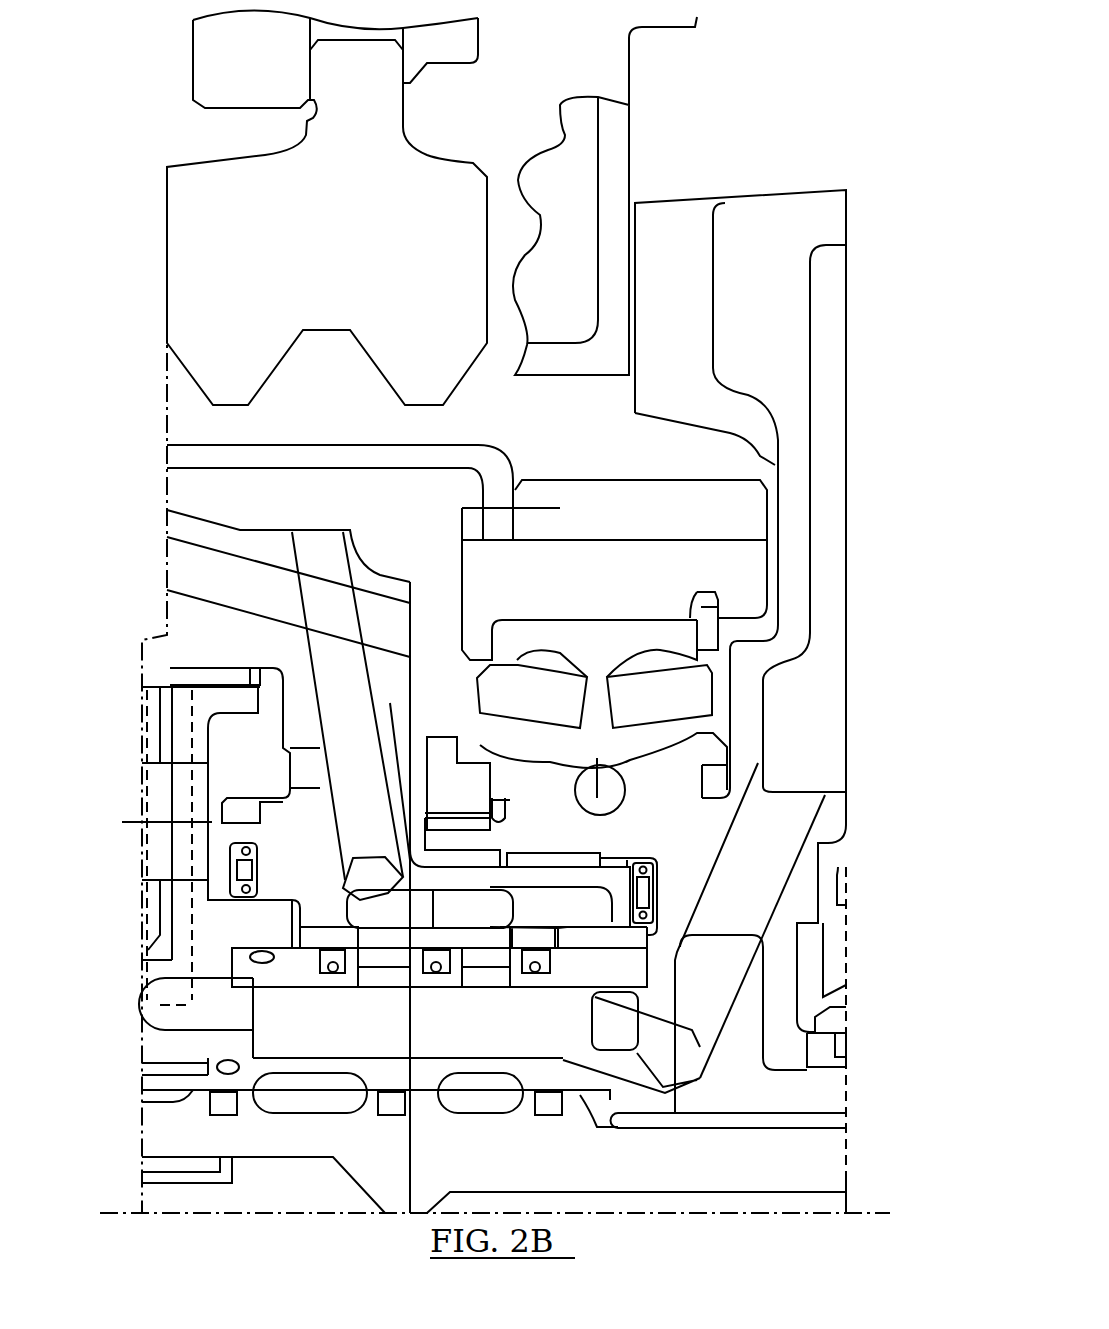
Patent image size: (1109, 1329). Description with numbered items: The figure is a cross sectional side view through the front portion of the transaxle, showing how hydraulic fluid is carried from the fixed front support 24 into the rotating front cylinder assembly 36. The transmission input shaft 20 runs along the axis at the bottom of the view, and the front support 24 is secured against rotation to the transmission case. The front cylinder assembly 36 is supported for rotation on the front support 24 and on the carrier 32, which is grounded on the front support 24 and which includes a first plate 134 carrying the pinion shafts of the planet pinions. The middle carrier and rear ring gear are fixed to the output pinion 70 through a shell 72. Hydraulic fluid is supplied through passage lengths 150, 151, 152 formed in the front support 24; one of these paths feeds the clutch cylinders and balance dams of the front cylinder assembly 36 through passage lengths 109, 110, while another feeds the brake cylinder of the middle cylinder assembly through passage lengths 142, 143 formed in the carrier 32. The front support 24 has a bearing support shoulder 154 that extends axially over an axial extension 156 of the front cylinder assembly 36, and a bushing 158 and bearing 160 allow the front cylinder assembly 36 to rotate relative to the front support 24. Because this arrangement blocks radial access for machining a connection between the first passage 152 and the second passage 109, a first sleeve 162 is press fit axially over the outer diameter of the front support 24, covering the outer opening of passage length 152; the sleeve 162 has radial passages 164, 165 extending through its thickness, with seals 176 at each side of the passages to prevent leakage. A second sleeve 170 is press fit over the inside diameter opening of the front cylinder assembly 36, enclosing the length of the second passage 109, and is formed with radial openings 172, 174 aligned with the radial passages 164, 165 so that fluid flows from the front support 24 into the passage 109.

The transmission input shaft 20 is at (697, 1178).
The front support 24 is at (763, 210).
The carrier 32 is at (213, 752).
The front cylinder assembly 36 is at (228, 540).
The output pinion 70 is at (588, 505).
The shell 72 is at (482, 462).
The passage length 109 is at (493, 920).
The passage length 110 is at (360, 727).
The first plate 134 is at (198, 740).
The passage length 142 is at (240, 1025).
The passage length 143 is at (180, 833).
The passage length 150 is at (780, 877).
The passage length 151 is at (631, 1042).
The first passage 152 is at (310, 1038).
The bearing support shoulder 154 is at (652, 848).
The axial extension 156 is at (462, 873).
The bushing 158 is at (558, 858).
The bearing 160 is at (643, 897).
The first sleeve 162 is at (278, 967).
The radial passage 164 is at (385, 978).
The radial passage 165 is at (487, 980).
The second sleeve 170 is at (330, 933).
The radial opening 172 is at (393, 940).
The radial opening 174 is at (497, 935).
The seal 176 is at (332, 970).